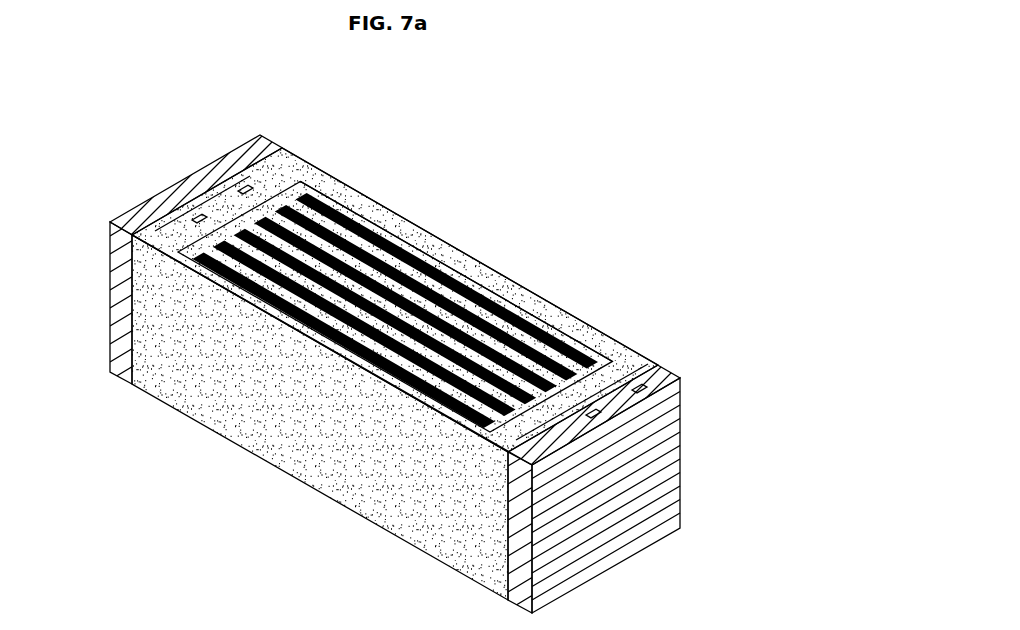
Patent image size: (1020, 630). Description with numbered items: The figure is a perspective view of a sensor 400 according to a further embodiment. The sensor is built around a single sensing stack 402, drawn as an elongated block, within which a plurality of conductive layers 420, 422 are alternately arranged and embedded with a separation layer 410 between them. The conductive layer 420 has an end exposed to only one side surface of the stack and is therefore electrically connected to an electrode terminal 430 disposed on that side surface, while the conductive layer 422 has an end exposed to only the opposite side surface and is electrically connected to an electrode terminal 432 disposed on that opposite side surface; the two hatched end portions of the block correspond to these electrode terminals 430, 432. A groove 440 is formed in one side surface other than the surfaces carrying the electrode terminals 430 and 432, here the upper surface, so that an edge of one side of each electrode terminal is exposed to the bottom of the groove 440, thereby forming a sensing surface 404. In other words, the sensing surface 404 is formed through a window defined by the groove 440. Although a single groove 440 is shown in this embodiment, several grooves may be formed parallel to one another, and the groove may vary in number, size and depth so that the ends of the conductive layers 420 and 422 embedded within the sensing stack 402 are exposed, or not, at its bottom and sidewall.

The sensor 400 is at (116, 61).
The sensing stack 402 is at (288, 485).
The sensing surface 404 is at (447, 205).
The separation layer 410 is at (293, 166).
The conductive layer 420 is at (242, 180).
The conductive layer 422 is at (600, 333).
The electrode terminal 430 is at (118, 320).
The electrode terminal 432 is at (676, 478).
The groove 440 is at (376, 212).